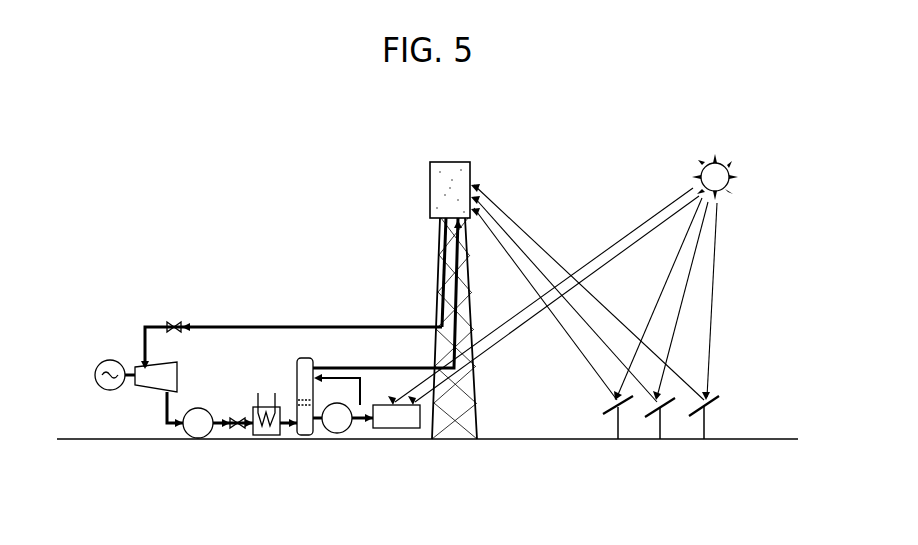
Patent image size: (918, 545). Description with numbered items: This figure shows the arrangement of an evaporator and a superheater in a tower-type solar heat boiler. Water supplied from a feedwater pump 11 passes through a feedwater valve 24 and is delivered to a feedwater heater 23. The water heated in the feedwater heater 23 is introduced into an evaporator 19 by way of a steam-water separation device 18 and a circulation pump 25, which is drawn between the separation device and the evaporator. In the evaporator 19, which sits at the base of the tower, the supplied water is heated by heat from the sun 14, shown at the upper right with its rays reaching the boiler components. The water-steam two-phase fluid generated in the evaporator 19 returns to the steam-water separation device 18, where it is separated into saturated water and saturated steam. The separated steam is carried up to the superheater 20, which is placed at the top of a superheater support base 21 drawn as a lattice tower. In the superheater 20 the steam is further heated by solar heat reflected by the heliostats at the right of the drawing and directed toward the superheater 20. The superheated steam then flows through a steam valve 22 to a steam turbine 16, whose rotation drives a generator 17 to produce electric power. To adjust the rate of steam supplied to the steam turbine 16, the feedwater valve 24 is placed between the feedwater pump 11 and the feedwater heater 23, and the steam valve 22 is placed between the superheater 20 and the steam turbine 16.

The feedwater pump 11 is at (172, 442).
The sun 14 is at (730, 167).
The steam turbine 16 is at (149, 380).
The generator 17 is at (100, 363).
The steam-water separation device 18 is at (353, 308).
The evaporator 19 is at (399, 428).
The superheater 20 is at (430, 184).
The superheater support base 21 is at (435, 272).
The steam valve 22 is at (212, 298).
The feedwater heater 23 is at (260, 407).
The feedwater valve 24 is at (234, 430).
The circulation pump 25 is at (336, 434).